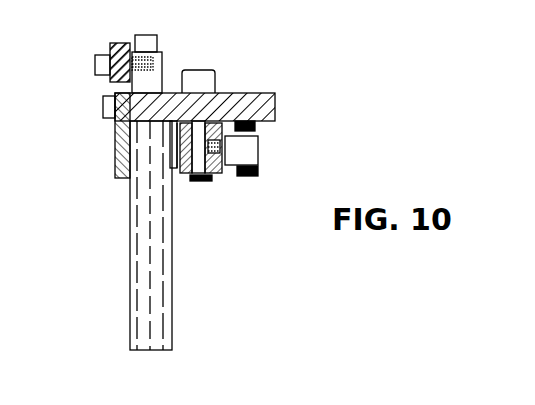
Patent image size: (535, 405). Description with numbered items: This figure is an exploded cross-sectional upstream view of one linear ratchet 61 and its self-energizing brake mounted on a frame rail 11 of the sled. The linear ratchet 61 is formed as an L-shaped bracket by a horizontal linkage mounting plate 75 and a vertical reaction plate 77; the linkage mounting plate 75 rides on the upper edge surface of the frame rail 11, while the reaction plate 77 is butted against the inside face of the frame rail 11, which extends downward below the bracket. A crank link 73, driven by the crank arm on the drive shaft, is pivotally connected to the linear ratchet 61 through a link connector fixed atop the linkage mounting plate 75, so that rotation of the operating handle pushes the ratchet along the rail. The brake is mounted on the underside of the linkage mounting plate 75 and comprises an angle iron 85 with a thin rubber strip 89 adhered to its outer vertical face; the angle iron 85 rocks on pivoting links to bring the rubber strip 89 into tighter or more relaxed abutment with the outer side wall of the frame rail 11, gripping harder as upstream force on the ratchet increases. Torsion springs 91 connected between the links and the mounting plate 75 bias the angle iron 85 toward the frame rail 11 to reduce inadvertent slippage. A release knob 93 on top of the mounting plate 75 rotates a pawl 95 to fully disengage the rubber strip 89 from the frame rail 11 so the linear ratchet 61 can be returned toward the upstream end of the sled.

The frame rail 11 is at (121, 235).
The linear ratchet 61 is at (316, 89).
The crank link 73 is at (110, 58).
The linkage mounting plate 75 is at (240, 92).
The reaction plate 77 is at (115, 167).
The angle iron 85 is at (174, 165).
The rubber strip 89 is at (172, 148).
The torsion spring 91 is at (257, 125).
The release knob 93 is at (202, 70).
The pawl 95 is at (216, 174).